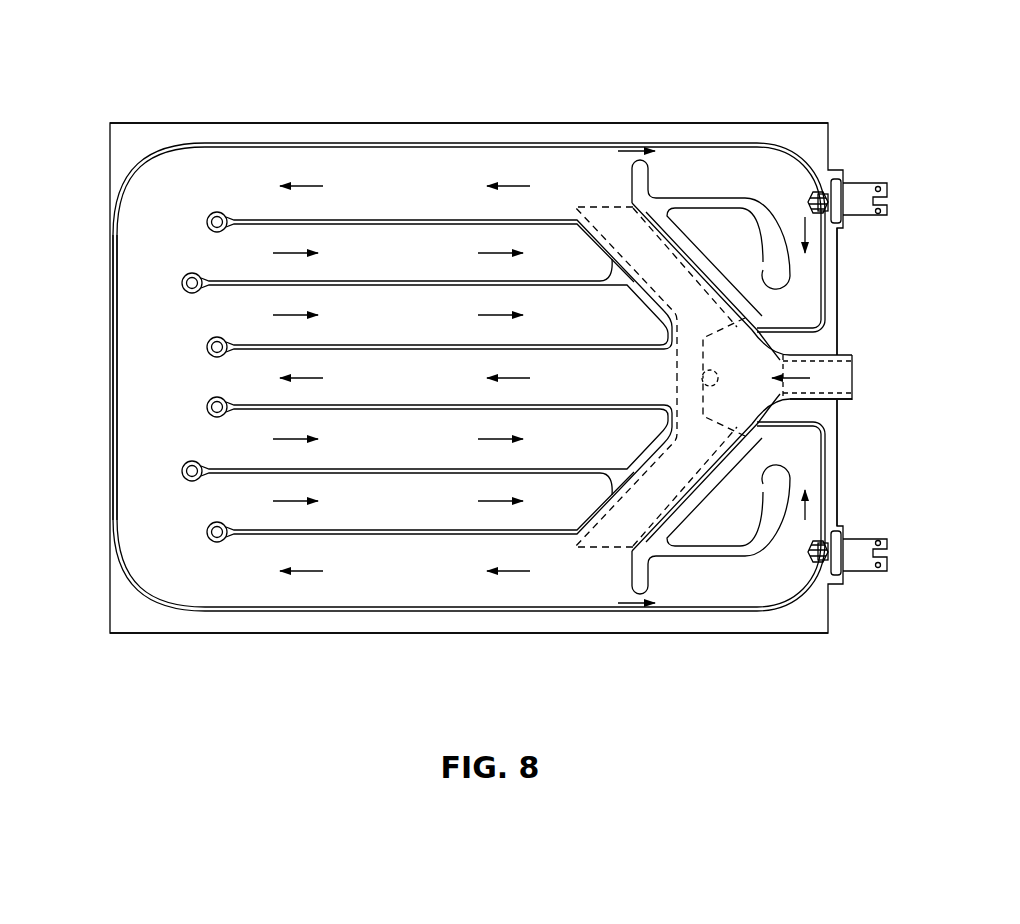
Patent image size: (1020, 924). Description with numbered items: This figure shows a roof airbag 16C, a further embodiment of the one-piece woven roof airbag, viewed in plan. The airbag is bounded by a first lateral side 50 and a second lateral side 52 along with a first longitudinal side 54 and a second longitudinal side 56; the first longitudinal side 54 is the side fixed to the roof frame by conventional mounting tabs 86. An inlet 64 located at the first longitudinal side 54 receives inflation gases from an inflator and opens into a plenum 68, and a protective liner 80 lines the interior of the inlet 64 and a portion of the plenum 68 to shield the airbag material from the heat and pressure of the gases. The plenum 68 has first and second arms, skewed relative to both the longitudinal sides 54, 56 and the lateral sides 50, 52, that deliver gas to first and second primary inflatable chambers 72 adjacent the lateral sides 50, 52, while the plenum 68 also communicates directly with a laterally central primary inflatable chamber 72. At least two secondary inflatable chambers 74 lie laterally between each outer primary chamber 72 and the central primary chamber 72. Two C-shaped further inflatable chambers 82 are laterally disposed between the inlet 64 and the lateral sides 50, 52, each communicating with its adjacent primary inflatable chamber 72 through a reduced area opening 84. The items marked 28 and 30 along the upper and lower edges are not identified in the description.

The roof airbag 16C is at (497, 104).
The first wall 28 is at (357, 133).
The second wall 30 is at (478, 635).
The first lateral side 50 is at (270, 122).
The second lateral side 52 is at (432, 627).
The first longitudinal side 54 is at (838, 327).
The second longitudinal side 56 is at (112, 360).
The inlet 64 is at (848, 403).
The plenum 68 is at (598, 548).
The primary inflatable chambers 72 is at (412, 586).
The secondary inflatable chambers 74 is at (412, 515).
The protective liner 80 is at (853, 373).
The further inflatable chambers 82 is at (743, 596).
The reduced area opening 84 is at (574, 152).
The mounting tabs 86 is at (855, 193).